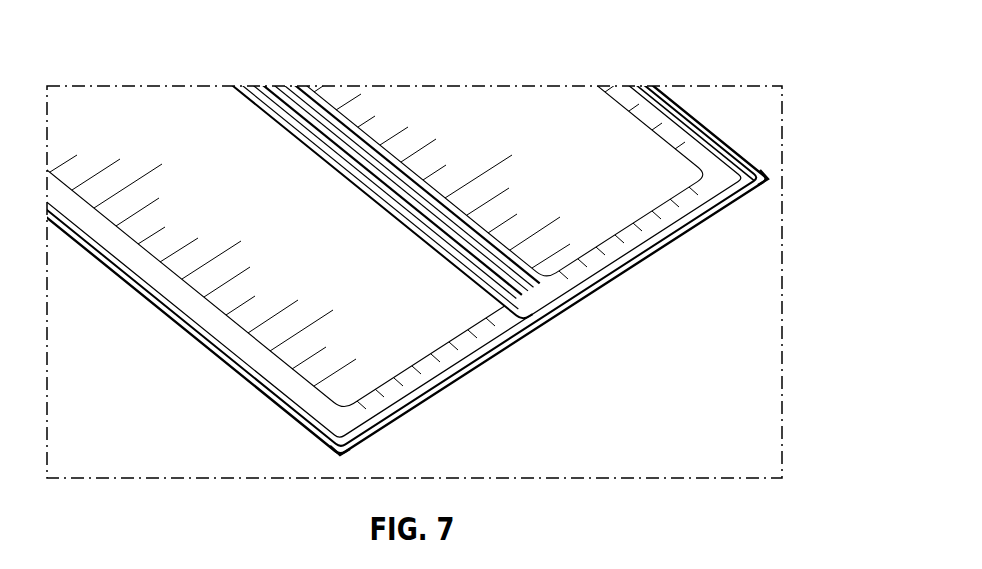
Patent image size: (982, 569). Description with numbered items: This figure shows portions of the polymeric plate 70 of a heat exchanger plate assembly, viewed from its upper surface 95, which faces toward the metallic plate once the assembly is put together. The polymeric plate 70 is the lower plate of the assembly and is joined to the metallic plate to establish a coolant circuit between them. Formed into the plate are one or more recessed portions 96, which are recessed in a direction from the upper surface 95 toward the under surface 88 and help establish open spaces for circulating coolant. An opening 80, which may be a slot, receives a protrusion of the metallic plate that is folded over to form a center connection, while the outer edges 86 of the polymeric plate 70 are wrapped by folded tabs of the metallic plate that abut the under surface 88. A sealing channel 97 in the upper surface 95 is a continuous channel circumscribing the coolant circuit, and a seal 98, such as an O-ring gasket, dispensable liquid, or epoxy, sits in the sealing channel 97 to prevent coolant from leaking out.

The polymeric plate 70 is at (531, 104).
The recessed portions 96 is at (158, 123).
The opening 80 is at (438, 194).
The sealing channel 97 is at (623, 253).
The seal 98 is at (407, 397).
The under surface 88 is at (425, 417).
The upper surface 95 is at (336, 455).
The outer edges 86 is at (764, 178).